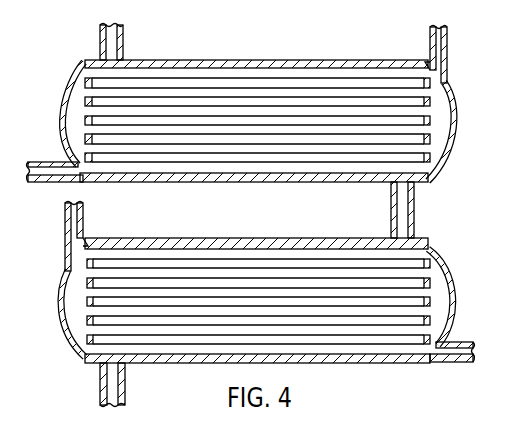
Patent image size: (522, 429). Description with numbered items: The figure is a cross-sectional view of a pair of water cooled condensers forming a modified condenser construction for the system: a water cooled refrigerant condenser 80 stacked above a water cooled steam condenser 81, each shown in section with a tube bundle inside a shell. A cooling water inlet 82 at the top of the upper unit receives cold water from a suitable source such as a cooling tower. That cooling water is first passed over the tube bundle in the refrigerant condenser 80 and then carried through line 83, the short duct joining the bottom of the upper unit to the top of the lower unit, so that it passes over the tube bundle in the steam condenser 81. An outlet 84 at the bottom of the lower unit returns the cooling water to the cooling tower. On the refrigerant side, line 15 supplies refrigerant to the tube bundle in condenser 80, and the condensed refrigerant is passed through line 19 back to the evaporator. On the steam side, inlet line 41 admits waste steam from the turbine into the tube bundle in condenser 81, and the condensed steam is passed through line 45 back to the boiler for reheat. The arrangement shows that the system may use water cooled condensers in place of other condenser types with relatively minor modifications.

The line 15 is at (447, 40).
The line 19 is at (50, 162).
The inlet line 41 is at (83, 219).
The line 45 is at (447, 358).
The water cooled refrigerant condenser 80 is at (321, 61).
The water cooled steam condenser 81 is at (264, 241).
The cooling water inlet 82 is at (123, 43).
The line 83 is at (414, 222).
The outlet 84 is at (125, 389).